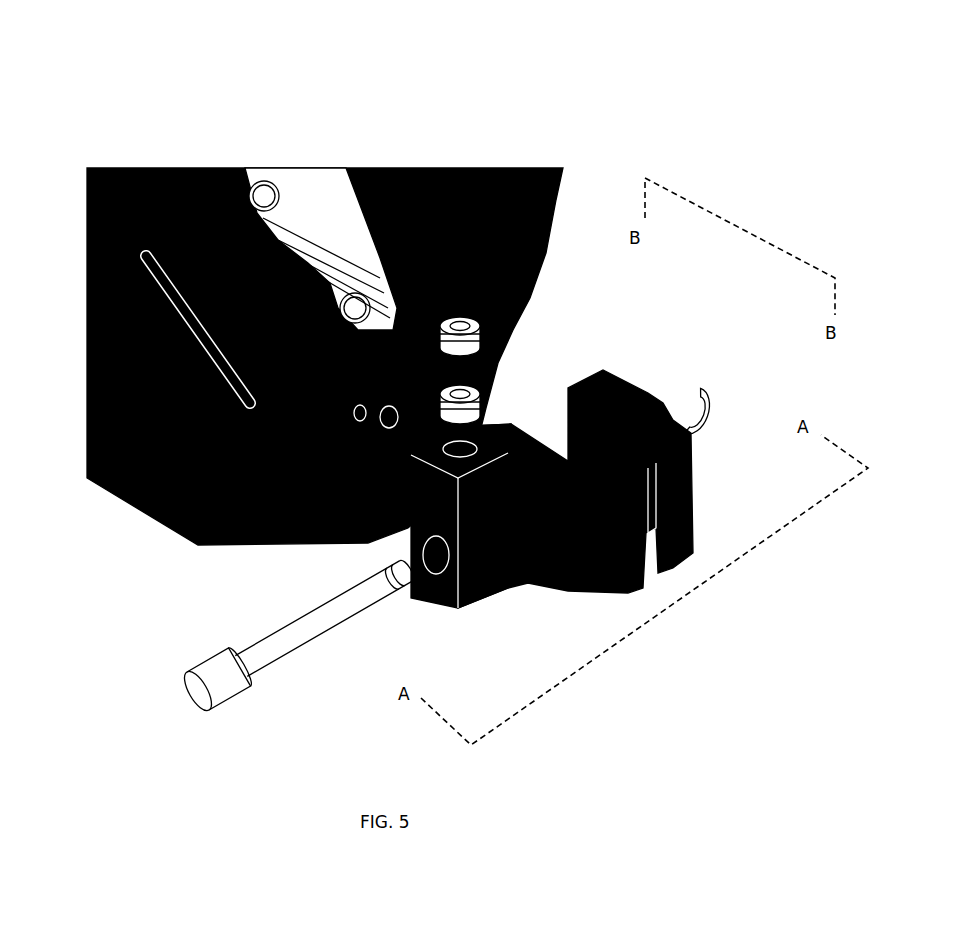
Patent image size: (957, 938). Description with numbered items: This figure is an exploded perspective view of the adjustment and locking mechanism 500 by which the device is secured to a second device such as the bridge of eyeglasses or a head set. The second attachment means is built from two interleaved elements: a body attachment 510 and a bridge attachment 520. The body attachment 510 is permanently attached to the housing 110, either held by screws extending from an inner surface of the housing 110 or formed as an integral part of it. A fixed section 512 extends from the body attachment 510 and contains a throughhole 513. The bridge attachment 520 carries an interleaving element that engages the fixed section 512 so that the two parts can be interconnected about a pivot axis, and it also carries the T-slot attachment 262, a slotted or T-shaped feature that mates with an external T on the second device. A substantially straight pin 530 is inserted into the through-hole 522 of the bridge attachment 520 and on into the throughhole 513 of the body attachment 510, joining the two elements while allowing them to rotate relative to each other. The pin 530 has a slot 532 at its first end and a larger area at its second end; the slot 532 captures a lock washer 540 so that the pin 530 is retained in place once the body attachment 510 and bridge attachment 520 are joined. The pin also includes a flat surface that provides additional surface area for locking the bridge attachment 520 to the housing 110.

The adjustment and locking mechanism 500 is at (241, 32).
The housing 110 is at (237, 405).
The body attachment 510 is at (240, 403).
The fixed section 512 is at (380, 410).
The throughhole 513 is at (352, 403).
The bridge attachment 520 is at (545, 565).
The through-hole 522 is at (430, 550).
The pin 530 is at (300, 680).
The slot 532 is at (420, 590).
The lock washer 540 is at (707, 427).
The T-slot attachment 262 is at (640, 540).